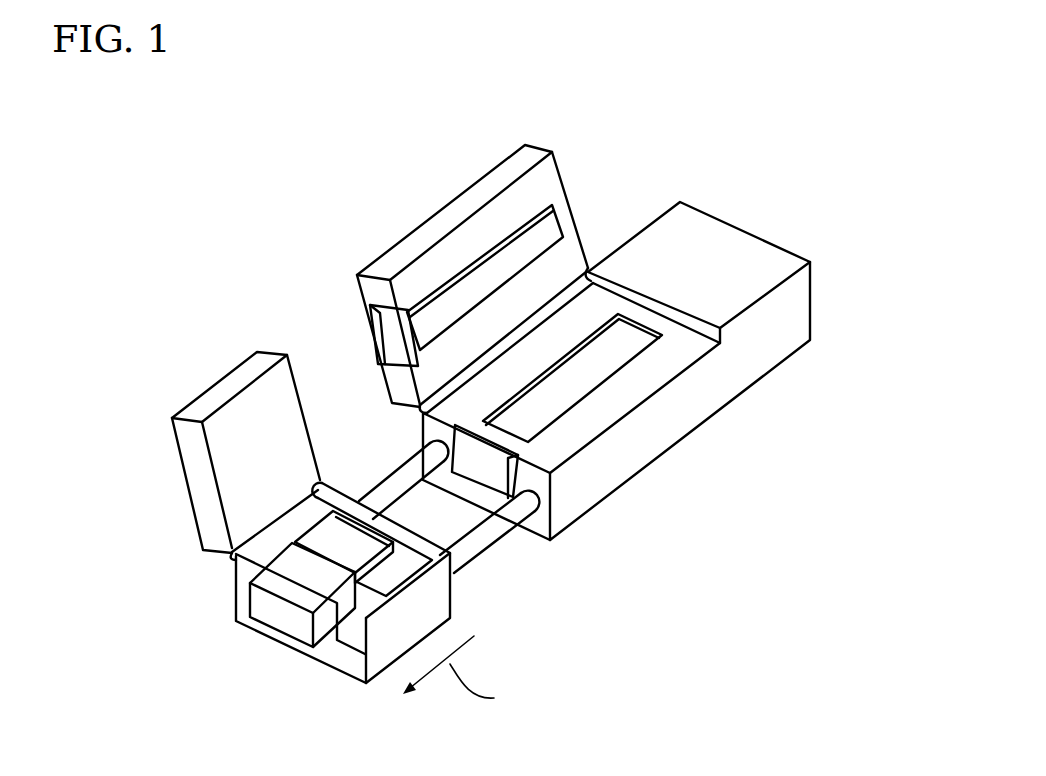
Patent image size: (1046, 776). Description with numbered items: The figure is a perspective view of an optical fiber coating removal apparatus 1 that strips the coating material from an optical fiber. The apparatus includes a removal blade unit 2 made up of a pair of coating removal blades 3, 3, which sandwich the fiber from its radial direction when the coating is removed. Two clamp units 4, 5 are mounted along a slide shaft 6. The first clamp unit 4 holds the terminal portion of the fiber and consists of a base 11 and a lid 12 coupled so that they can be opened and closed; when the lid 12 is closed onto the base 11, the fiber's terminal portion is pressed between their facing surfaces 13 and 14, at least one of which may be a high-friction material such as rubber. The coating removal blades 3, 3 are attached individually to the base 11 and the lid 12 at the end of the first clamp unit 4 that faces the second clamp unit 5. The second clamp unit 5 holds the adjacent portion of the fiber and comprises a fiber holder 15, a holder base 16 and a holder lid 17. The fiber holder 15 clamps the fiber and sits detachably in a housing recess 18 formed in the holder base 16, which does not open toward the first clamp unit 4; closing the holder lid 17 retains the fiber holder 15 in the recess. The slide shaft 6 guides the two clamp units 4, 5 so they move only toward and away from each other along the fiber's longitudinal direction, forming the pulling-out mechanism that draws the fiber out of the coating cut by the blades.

The optical fiber coating removal apparatus 1 is at (655, 150).
The removal blade unit 2 is at (455, 153).
The coating removal blade 3 is at (398, 325).
The first clamp unit 4 is at (795, 372).
The second clamp unit 5 is at (226, 626).
The slide shaft 6 is at (394, 487).
The base 11 is at (677, 423).
The lid 12 is at (500, 180).
The facing surface 13 is at (628, 343).
The facing surface 14 is at (548, 232).
The fiber holder 15 is at (284, 622).
The holder base 16 is at (437, 598).
The holder lid 17 is at (232, 382).
The housing recess 18 is at (271, 550).